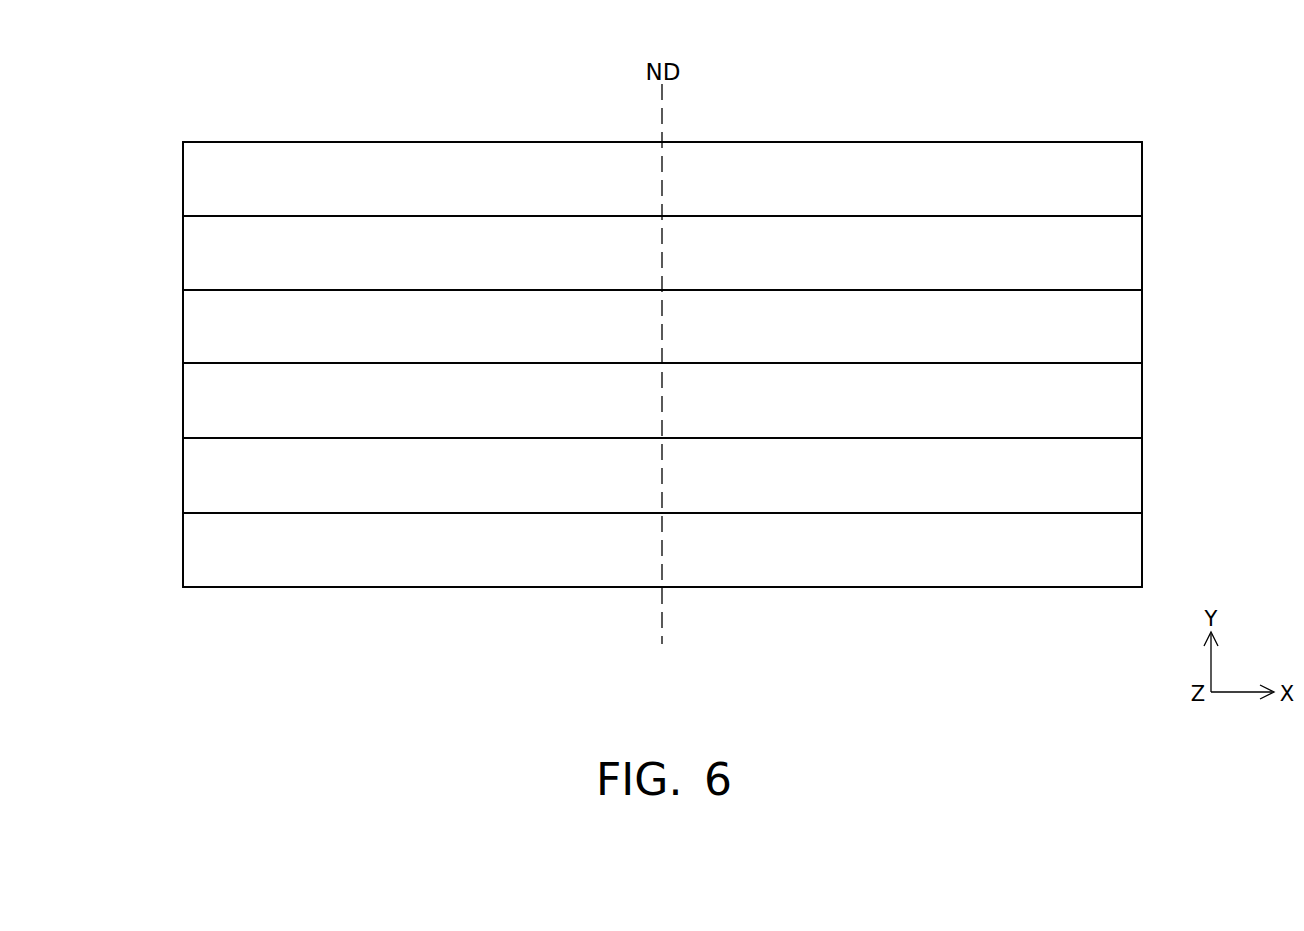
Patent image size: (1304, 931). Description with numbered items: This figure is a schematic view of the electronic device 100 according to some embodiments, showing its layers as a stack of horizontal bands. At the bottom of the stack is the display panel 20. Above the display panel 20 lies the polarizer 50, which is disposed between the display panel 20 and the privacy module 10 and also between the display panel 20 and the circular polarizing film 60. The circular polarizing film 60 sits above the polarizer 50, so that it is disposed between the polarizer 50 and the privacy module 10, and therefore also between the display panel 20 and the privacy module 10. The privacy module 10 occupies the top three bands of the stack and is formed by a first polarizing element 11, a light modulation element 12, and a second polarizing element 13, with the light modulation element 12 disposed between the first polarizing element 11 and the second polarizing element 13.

The electronic device 100 is at (181, 51).
The privacy module 10 is at (127, 170).
The first polarizing element 11 is at (203, 178).
The light modulation element 12 is at (203, 252).
The second polarizing element 13 is at (203, 326).
The circular polarizing film 60 is at (203, 400).
The polarizer 50 is at (203, 475).
The display panel 20 is at (203, 550).